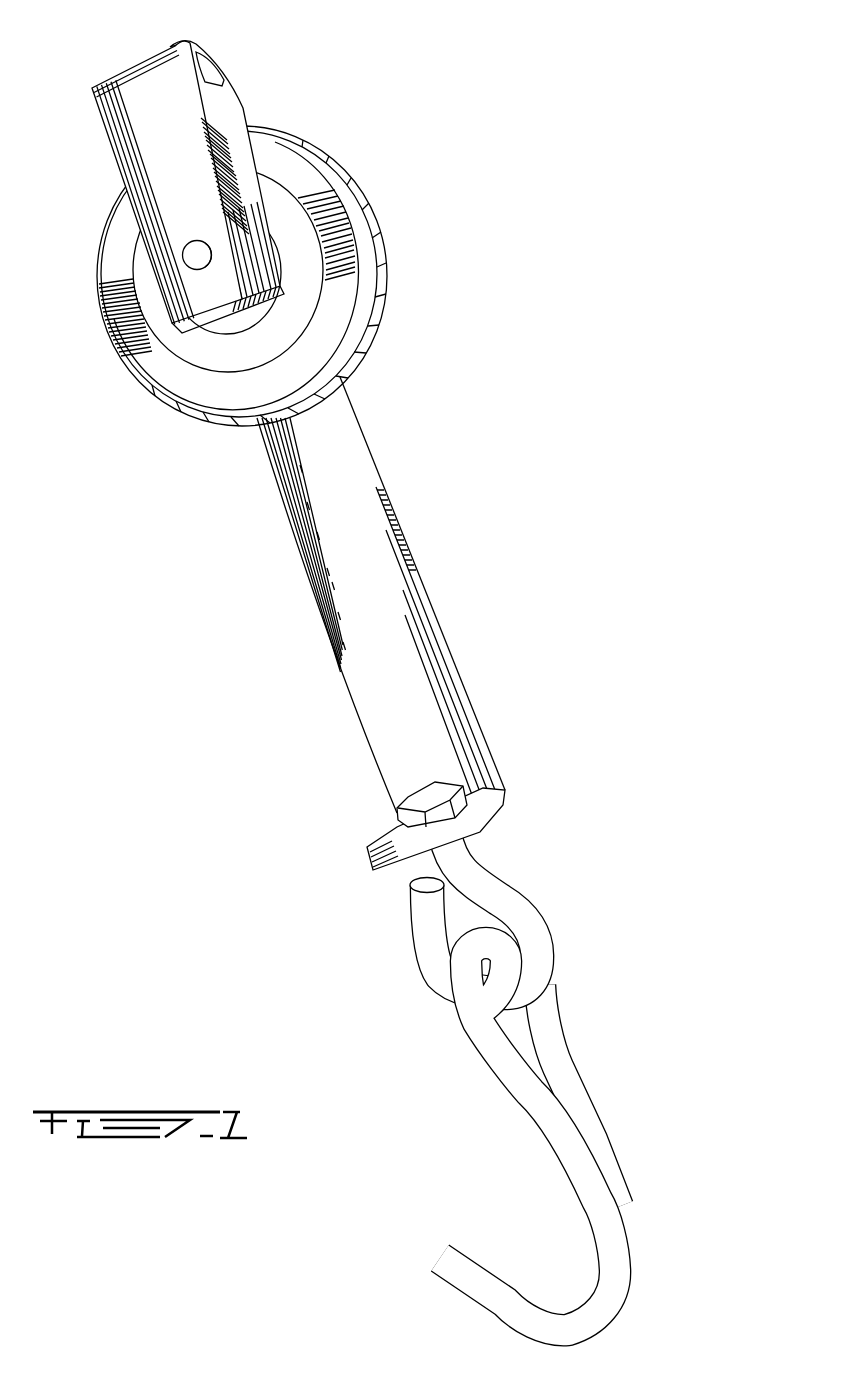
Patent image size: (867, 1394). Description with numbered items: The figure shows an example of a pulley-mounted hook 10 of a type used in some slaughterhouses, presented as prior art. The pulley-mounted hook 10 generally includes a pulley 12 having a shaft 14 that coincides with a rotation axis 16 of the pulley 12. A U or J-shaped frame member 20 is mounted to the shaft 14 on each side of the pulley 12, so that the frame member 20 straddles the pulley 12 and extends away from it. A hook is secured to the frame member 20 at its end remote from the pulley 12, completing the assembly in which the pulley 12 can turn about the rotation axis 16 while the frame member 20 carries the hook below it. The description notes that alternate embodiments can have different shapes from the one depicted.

The pulley-mounted hook 10 is at (374, 686).
The pulley 12 is at (367, 340).
The shaft 14 is at (236, 322).
The rotation axis 16 is at (195, 250).
The frame member 20 is at (430, 597).